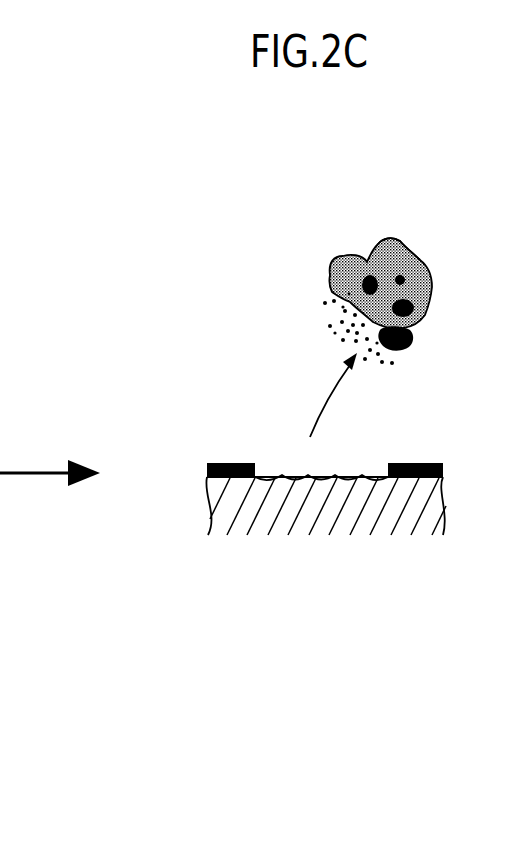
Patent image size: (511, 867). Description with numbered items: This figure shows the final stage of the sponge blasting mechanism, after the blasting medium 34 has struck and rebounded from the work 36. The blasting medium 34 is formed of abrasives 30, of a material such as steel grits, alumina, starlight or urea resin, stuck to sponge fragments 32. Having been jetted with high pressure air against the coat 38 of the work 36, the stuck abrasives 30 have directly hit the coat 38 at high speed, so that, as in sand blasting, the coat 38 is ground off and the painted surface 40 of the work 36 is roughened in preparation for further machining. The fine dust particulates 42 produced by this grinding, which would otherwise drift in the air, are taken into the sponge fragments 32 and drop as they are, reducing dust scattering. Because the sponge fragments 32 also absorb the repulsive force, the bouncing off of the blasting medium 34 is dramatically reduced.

The abrasives 30 is at (363, 256).
The sponge fragments 32 is at (397, 235).
The blasting medium 34 is at (323, 250).
The work 36 is at (225, 498).
The coat 38 is at (218, 463).
The painted surface 40 is at (327, 477).
The fine dust particulates 42 is at (350, 313).